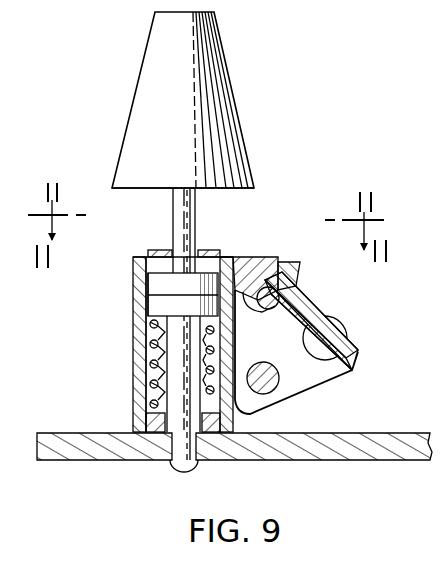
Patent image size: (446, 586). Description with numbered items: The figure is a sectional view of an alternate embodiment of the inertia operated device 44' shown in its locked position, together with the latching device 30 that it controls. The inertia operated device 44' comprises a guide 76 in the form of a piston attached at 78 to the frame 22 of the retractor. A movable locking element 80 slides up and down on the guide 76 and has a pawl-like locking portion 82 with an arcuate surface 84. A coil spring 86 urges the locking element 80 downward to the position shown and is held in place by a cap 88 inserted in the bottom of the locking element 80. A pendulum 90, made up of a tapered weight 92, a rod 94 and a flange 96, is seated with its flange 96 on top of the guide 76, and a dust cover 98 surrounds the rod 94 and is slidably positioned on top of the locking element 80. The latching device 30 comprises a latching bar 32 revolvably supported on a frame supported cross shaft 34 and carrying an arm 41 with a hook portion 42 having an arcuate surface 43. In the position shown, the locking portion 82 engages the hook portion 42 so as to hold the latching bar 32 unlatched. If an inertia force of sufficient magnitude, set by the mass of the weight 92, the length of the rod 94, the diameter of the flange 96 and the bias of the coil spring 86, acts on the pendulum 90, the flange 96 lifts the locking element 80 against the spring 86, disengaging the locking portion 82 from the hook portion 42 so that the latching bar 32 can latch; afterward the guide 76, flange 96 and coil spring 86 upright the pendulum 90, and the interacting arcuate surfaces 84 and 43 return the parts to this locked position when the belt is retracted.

The frame 22 is at (388, 431).
The latching device 30 is at (304, 355).
The latching bar 32 is at (318, 316).
The cross shaft 34 is at (274, 390).
The arm 41 is at (305, 308).
The hook portion 42 is at (277, 290).
The arcuate surface 43 is at (248, 293).
The inertia operated device 44' is at (107, 296).
The guide 76 is at (160, 328).
The attachment point 78 is at (188, 470).
The locking element 80 is at (133, 393).
The locking portion 82 is at (253, 258).
The arcuate surface 84 is at (283, 262).
The coil spring 86 is at (156, 356).
The cap 88 is at (156, 434).
The pendulum 90 is at (236, 106).
The tapered weight 92 is at (123, 158).
The rod 94 is at (180, 222).
The flange 96 is at (236, 256).
The dust cover 98 is at (209, 250).